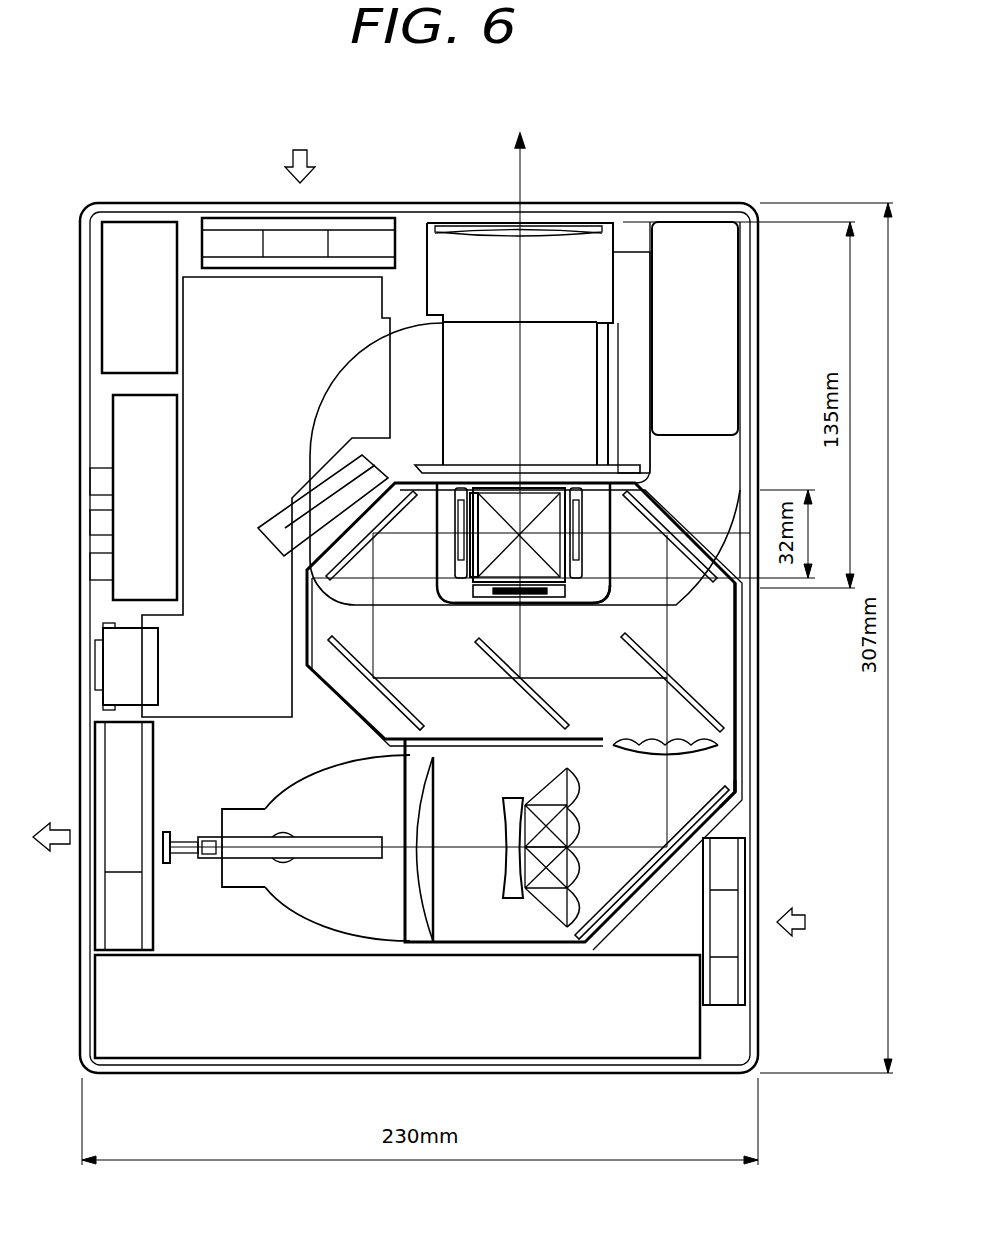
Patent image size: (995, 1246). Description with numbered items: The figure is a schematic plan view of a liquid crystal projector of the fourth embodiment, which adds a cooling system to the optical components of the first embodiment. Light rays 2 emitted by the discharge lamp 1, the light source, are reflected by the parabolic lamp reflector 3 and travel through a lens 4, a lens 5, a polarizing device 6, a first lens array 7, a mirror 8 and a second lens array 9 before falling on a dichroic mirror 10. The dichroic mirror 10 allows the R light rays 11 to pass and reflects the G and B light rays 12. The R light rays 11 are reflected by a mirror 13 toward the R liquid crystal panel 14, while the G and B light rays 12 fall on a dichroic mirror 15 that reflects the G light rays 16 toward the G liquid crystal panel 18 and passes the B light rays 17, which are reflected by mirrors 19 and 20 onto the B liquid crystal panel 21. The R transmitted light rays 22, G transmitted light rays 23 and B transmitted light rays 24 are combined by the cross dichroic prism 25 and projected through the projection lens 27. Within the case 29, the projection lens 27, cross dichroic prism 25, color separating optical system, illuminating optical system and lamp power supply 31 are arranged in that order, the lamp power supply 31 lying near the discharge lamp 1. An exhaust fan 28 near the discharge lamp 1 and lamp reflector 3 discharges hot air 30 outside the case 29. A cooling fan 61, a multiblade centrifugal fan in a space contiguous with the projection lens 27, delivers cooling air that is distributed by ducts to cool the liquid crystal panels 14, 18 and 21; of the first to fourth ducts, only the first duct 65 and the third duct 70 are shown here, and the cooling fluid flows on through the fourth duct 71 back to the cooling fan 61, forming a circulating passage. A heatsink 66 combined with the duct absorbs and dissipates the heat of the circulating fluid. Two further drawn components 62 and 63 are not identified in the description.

The discharge lamp 1 is at (270, 890).
The light rays 2 is at (313, 852).
The parabolic lamp reflector 3 is at (287, 910).
The lens 4 is at (432, 900).
The lens 5 is at (513, 900).
The polarizing device 6 is at (542, 877).
The first lens array 7 is at (587, 945).
The mirror 8 is at (735, 800).
The second lens array 9 is at (720, 750).
The dichroic mirror 10 is at (710, 703).
The R light rays 11 is at (740, 665).
The G and B light rays 12 is at (606, 680).
The mirror 13 is at (662, 507).
The R liquid crystal panel 14 is at (577, 487).
The dichroic mirror 15 is at (525, 688).
The G light rays 16 is at (518, 622).
The B light rays 17 is at (452, 680).
The G liquid crystal panel 18 is at (603, 603).
The mirror 19 is at (383, 690).
The mirror 20 is at (312, 553).
The B liquid crystal panel 21 is at (462, 487).
The R transmitted light rays 22 is at (556, 530).
The G transmitted light rays 23 is at (475, 580).
The B transmitted light rays 24 is at (488, 530).
The cross dichroic prism 25 is at (533, 493).
The projection lens 27 is at (560, 243).
The exhaust fan 28 is at (113, 927).
The case 29 is at (755, 282).
The hot air 30 is at (60, 845).
The lamp power supply 31 is at (700, 1040).
The cooling fan 61 is at (680, 230).
The cooling fan 62 is at (745, 860).
The cooling fan 63 is at (233, 243).
The first duct 65 is at (713, 465).
The heatsink 66 is at (302, 527).
The third duct 70 is at (413, 352).
The fourth duct 71 is at (635, 260).